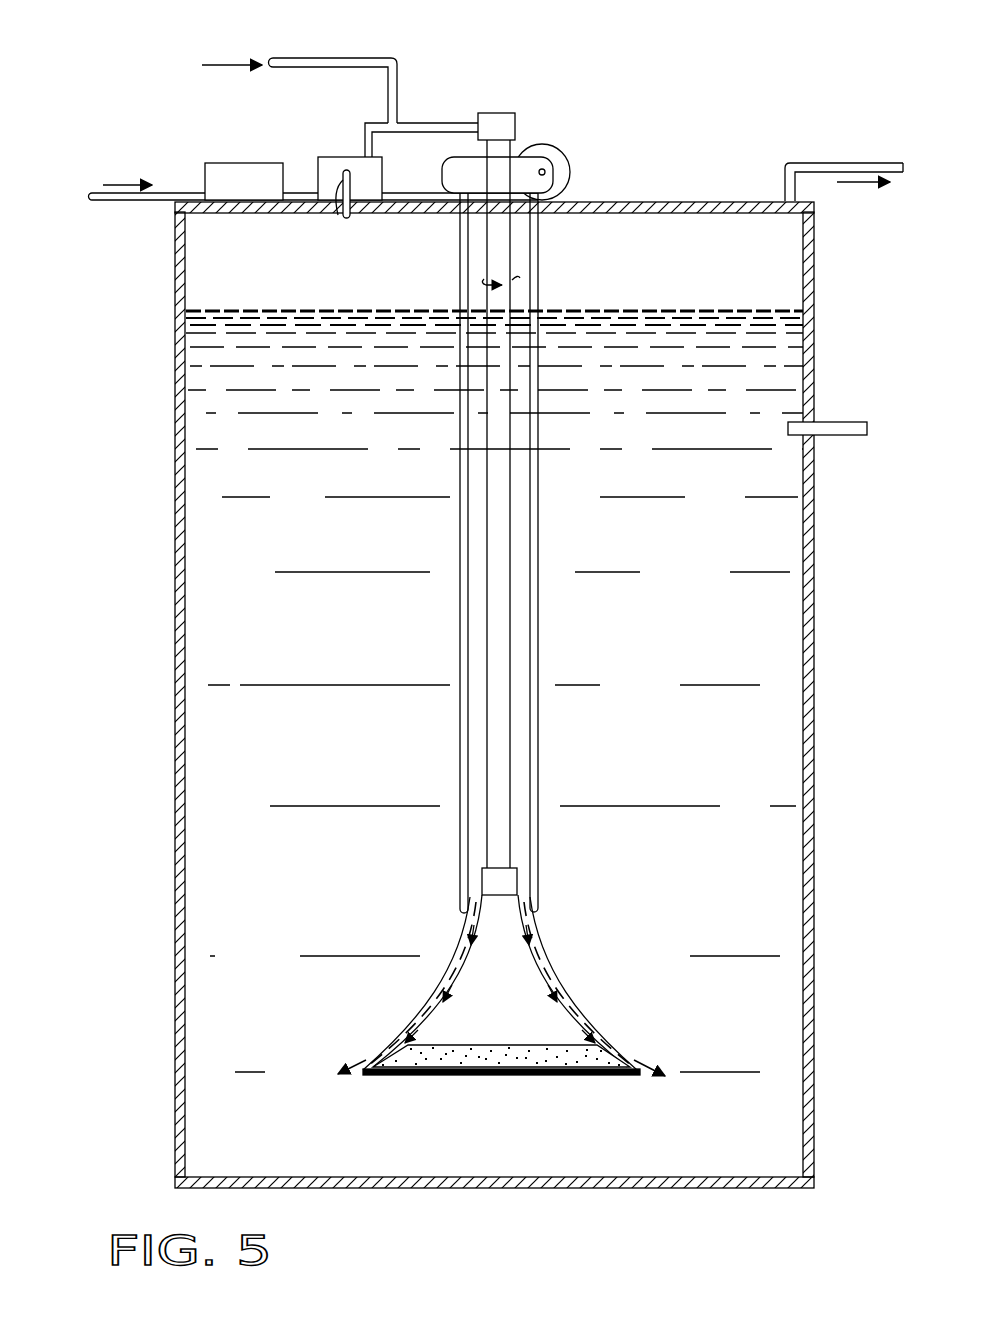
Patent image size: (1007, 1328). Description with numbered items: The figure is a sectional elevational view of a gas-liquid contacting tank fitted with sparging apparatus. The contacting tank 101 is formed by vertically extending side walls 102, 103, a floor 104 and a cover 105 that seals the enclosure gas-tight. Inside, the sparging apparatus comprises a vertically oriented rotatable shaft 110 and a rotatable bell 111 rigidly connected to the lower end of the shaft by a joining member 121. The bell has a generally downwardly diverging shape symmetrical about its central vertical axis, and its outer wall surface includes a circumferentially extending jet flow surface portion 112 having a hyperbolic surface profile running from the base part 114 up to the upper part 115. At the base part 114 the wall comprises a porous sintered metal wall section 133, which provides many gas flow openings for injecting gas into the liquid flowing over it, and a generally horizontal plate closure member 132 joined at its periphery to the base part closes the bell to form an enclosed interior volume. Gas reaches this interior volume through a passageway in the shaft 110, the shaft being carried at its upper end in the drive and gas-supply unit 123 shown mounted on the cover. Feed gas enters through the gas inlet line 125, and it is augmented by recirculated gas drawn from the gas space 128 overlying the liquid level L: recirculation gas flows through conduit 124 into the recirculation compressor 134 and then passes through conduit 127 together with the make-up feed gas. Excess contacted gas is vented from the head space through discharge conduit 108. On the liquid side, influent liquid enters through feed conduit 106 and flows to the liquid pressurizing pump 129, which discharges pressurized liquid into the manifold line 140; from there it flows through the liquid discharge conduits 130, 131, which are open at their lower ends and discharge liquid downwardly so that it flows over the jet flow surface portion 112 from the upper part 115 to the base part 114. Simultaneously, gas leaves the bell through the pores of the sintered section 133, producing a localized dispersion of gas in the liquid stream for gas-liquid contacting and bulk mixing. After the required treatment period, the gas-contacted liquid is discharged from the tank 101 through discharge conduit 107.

The contacting tank 101 is at (170, 1040).
The side wall 102 is at (176, 678).
The side wall 103 is at (808, 606).
The floor 104 is at (556, 1190).
The cover 105 is at (678, 201).
The feed conduit 106 is at (143, 203).
The discharge conduit 107 is at (848, 430).
The discharge conduit 108 is at (824, 162).
The rotatable shaft 110 is at (502, 531).
The rotatable bell 111 is at (447, 995).
The jet flow surface portion 112 is at (543, 980).
The base part 114 is at (620, 1038).
The upper part 115 is at (550, 937).
The joining member 121 is at (504, 882).
The pump 123 is at (560, 155).
The conduit 124 is at (344, 212).
The gas inlet line 125 is at (347, 57).
The conduit 127 is at (447, 112).
The gas space 128 is at (766, 262).
The liquid pressurizing pump 129 is at (248, 163).
The liquid discharge conduit 130 is at (468, 643).
The liquid discharge conduit 131 is at (537, 669).
The plate closure member 132 is at (433, 1077).
The porous sintered metal wall section 133 is at (558, 1059).
The recirculation compressor 134 is at (336, 157).
The manifold line 140 is at (410, 214).
The liquid level L is at (782, 311).